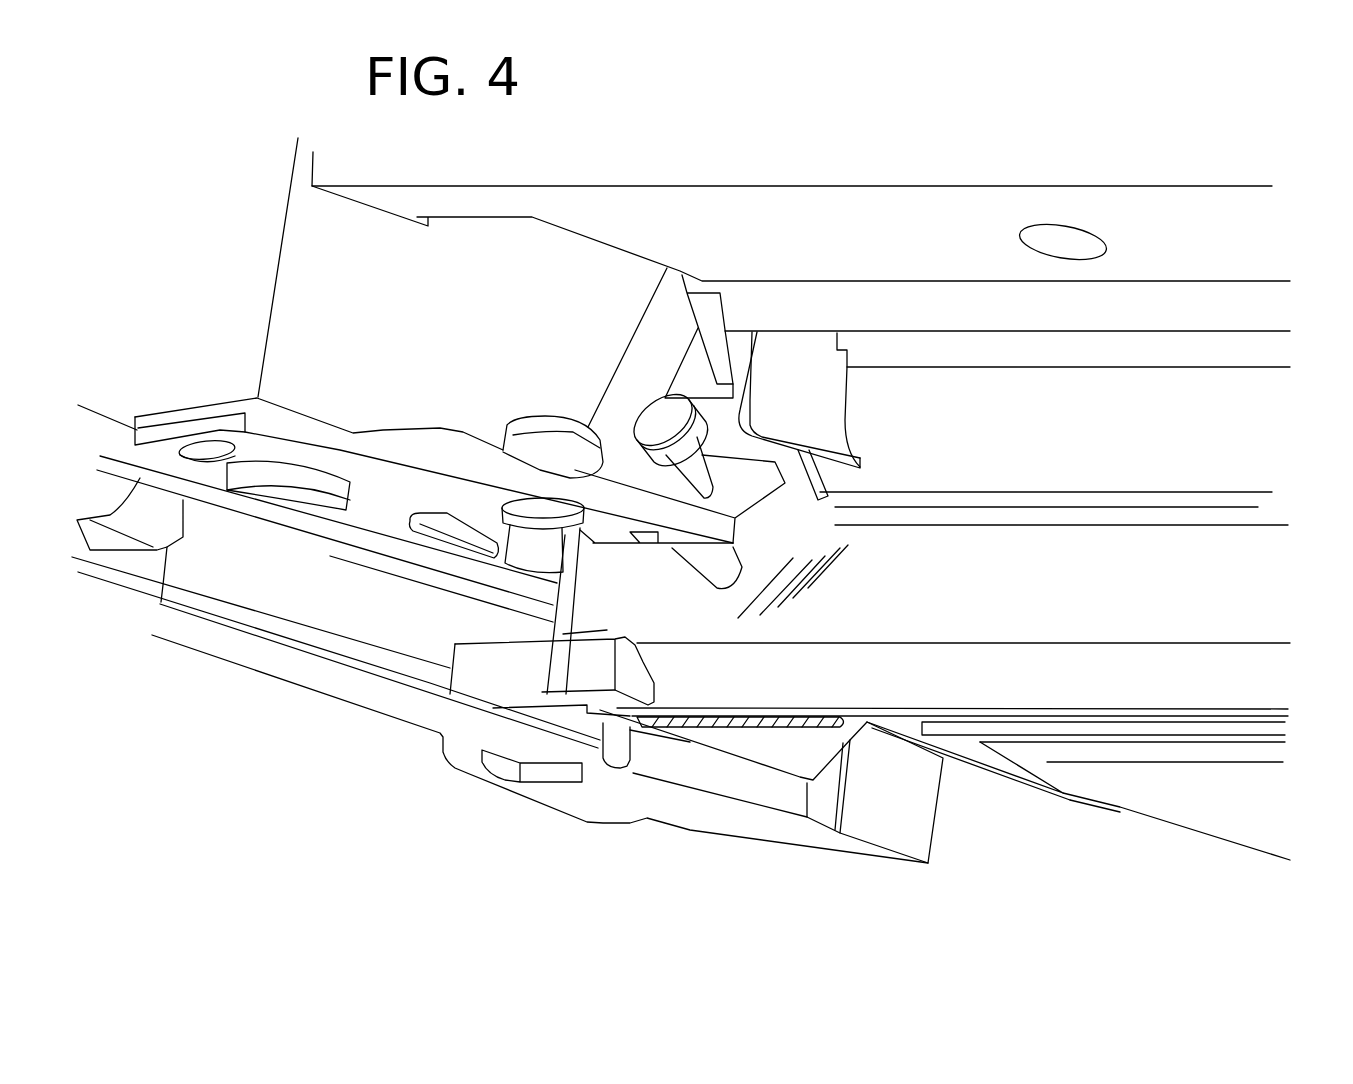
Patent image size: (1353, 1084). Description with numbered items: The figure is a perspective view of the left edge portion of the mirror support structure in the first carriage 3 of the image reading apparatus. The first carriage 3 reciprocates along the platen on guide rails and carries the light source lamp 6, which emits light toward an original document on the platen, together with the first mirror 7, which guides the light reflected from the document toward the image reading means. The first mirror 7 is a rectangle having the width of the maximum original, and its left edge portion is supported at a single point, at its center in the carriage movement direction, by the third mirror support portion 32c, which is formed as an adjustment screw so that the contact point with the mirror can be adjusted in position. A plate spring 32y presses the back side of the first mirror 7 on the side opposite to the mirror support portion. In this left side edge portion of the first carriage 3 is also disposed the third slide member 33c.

The first carriage 3 is at (990, 220).
The light source lamp 6 is at (897, 418).
The first mirror 7 is at (1105, 619).
The third mirror support portion 32c is at (658, 428).
The plate spring 32y is at (765, 728).
The third slide member 33c is at (127, 552).